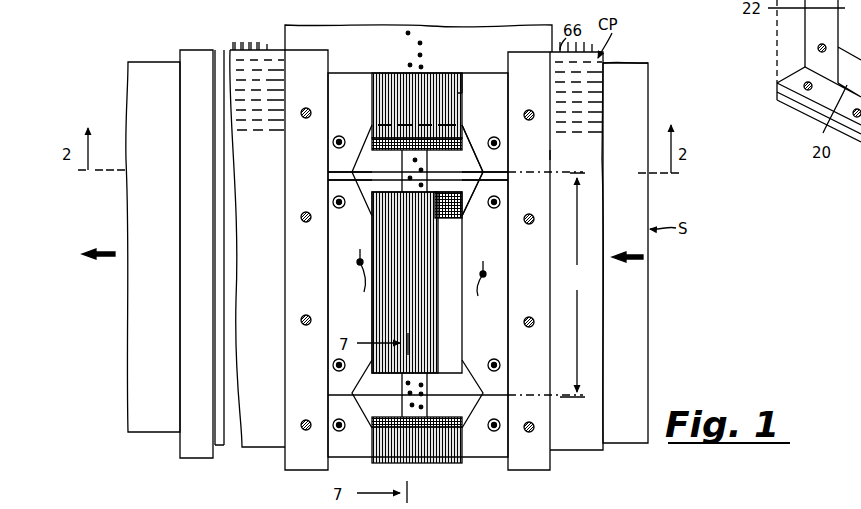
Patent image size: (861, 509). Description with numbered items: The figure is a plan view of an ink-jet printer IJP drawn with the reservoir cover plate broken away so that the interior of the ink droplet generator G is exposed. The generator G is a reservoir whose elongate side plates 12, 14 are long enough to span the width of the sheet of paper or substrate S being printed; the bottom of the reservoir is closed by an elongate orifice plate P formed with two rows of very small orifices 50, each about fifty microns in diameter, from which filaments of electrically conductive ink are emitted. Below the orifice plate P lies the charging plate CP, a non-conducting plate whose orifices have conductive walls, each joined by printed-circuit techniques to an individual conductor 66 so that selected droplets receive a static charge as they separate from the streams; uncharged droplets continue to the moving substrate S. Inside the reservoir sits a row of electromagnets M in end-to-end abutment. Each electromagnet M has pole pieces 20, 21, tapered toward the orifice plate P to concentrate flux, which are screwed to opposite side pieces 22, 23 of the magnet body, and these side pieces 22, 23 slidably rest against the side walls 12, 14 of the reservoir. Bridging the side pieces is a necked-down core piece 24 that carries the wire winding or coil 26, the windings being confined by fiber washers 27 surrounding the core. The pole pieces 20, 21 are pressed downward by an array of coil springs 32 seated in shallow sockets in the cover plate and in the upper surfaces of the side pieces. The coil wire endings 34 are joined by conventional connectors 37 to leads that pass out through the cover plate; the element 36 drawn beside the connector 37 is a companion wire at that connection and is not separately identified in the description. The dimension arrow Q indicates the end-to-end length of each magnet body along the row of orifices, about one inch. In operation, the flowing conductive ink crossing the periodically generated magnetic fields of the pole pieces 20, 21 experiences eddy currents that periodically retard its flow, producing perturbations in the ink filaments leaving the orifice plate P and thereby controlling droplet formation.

The side plate 12 is at (300, 62).
The side plate 14 is at (520, 58).
The pole piece 20 is at (342, 180).
The pole piece 21 is at (452, 178).
The side piece 22 is at (345, 171).
The side piece 23 is at (464, 156).
The core piece 24 is at (372, 124).
The wire winding 26 is at (440, 75).
The fiber washer 27 is at (460, 90).
The coil spring 32 is at (500, 143).
The coil wire ending 34 is at (472, 276).
The lead wire 36 is at (356, 275).
The connector 37 is at (356, 262).
The orifice 50 is at (410, 45).
The conductor 66 is at (232, 127).
The substrate S is at (146, 62).
The charging plate CP is at (236, 52).
The ink-jet printer IJP is at (628, 47).
The orifice plate P is at (536, 27).
The electromagnet M is at (356, 72).
The ink droplet generator G is at (555, 155).
The dimension arrow Q is at (572, 285).